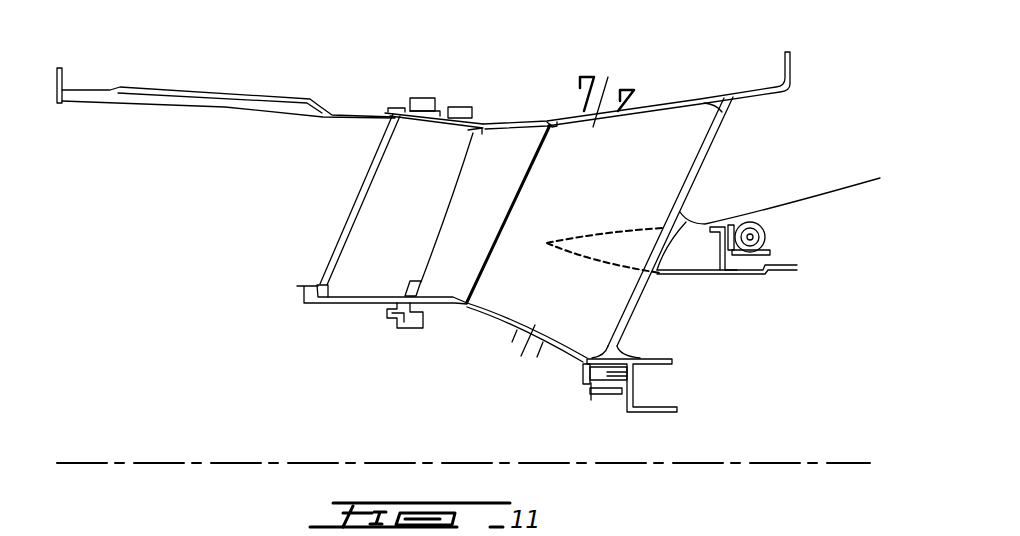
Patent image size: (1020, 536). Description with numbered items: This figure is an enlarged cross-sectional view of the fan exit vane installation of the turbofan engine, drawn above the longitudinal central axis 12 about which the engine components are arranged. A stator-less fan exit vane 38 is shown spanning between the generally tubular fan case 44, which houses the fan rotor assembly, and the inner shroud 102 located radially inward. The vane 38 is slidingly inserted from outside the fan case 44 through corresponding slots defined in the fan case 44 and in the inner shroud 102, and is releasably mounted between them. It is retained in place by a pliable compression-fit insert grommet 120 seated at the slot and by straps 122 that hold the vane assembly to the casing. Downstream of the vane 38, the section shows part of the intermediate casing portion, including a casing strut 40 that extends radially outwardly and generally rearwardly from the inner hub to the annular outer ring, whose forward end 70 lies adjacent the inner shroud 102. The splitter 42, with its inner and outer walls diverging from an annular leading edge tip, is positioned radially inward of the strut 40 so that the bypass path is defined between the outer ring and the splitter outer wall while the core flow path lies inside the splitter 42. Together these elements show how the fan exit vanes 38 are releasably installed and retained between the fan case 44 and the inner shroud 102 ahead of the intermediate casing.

The longitudinal central axis 12 is at (140, 462).
The fan exit vane 38 is at (437, 193).
The casing strut 40 is at (640, 165).
The splitter 42 is at (688, 249).
The fan case 44 is at (232, 86).
The forward end 70 is at (467, 305).
The inner shroud 102 is at (373, 303).
The compression-fit insert grommet 120 is at (470, 132).
The strap 122 is at (461, 107).